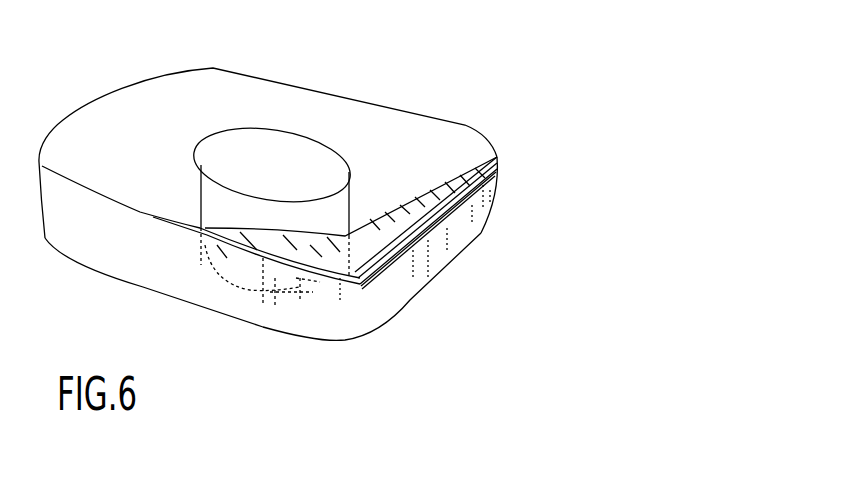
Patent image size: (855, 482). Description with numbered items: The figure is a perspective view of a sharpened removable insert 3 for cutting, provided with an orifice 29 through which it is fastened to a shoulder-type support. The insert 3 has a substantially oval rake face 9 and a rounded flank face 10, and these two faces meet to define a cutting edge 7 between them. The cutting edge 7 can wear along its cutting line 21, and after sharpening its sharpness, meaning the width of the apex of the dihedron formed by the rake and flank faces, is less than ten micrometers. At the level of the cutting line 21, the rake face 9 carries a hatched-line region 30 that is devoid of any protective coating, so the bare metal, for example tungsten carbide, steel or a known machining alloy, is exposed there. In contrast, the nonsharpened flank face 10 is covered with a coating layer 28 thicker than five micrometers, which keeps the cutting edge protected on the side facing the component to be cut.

The sharpened removable insert 3 is at (98, 85).
The rake face 9 is at (239, 115).
The orifice 29 is at (288, 160).
The cutting line 21 is at (397, 235).
The hatched-line region 30 is at (437, 178).
The cutting edge 7 is at (449, 222).
The flank face 10 is at (410, 273).
The coating layer 28 is at (318, 301).